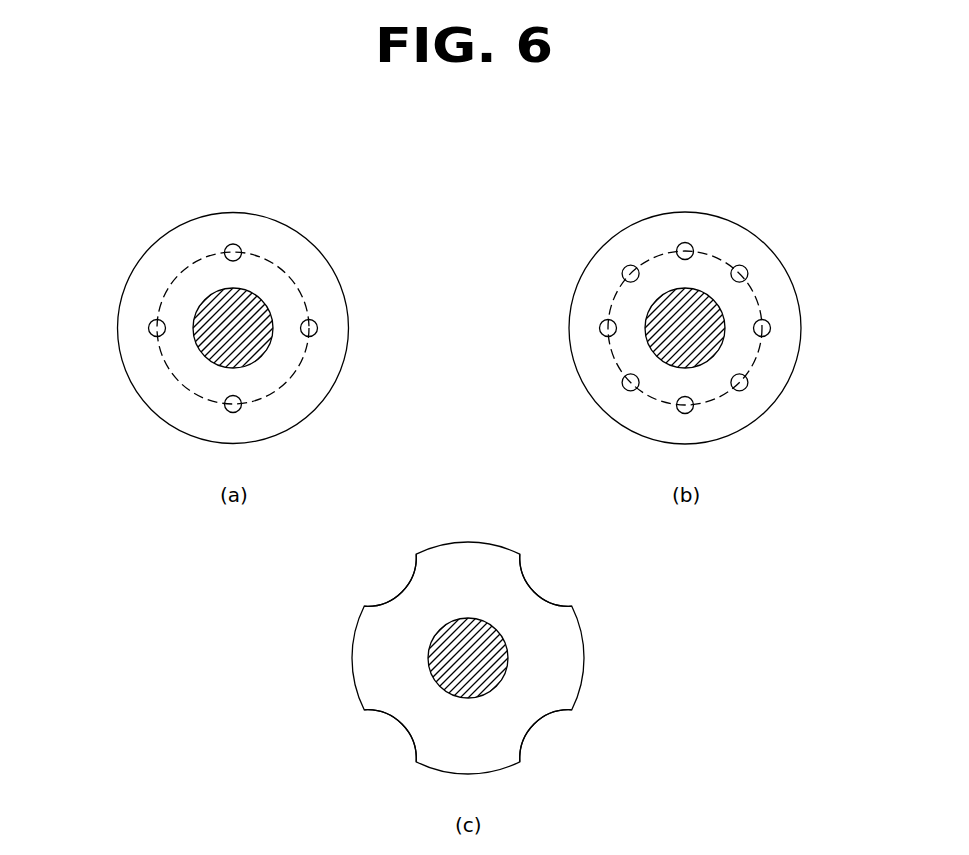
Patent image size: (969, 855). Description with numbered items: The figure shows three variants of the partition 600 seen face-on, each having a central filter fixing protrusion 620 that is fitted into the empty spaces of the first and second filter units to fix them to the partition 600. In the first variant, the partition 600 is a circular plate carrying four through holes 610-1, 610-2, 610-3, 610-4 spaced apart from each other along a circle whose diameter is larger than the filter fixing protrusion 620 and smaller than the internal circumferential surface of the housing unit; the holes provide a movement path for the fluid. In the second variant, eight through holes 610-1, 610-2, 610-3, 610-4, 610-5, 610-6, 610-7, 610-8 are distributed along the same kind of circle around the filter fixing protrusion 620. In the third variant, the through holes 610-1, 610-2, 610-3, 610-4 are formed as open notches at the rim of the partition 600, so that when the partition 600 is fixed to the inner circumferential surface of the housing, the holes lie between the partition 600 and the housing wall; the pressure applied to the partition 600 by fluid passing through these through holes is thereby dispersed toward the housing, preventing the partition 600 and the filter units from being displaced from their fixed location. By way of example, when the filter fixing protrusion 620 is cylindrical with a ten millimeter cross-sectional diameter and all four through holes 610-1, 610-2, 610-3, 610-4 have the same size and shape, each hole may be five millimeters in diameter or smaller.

The partition 600 is at (325, 290).
The filter fixing protrusion 620 is at (223, 312).
The through hole 610-1 is at (236, 245).
The through hole 610-2 is at (149, 327).
The through hole 610-3 is at (241, 408).
The through hole 610-4 is at (319, 326).
The through hole 610-5 is at (693, 408).
The through hole 610-6 is at (752, 383).
The through hole 610-7 is at (771, 326).
The through hole 610-8 is at (744, 267).